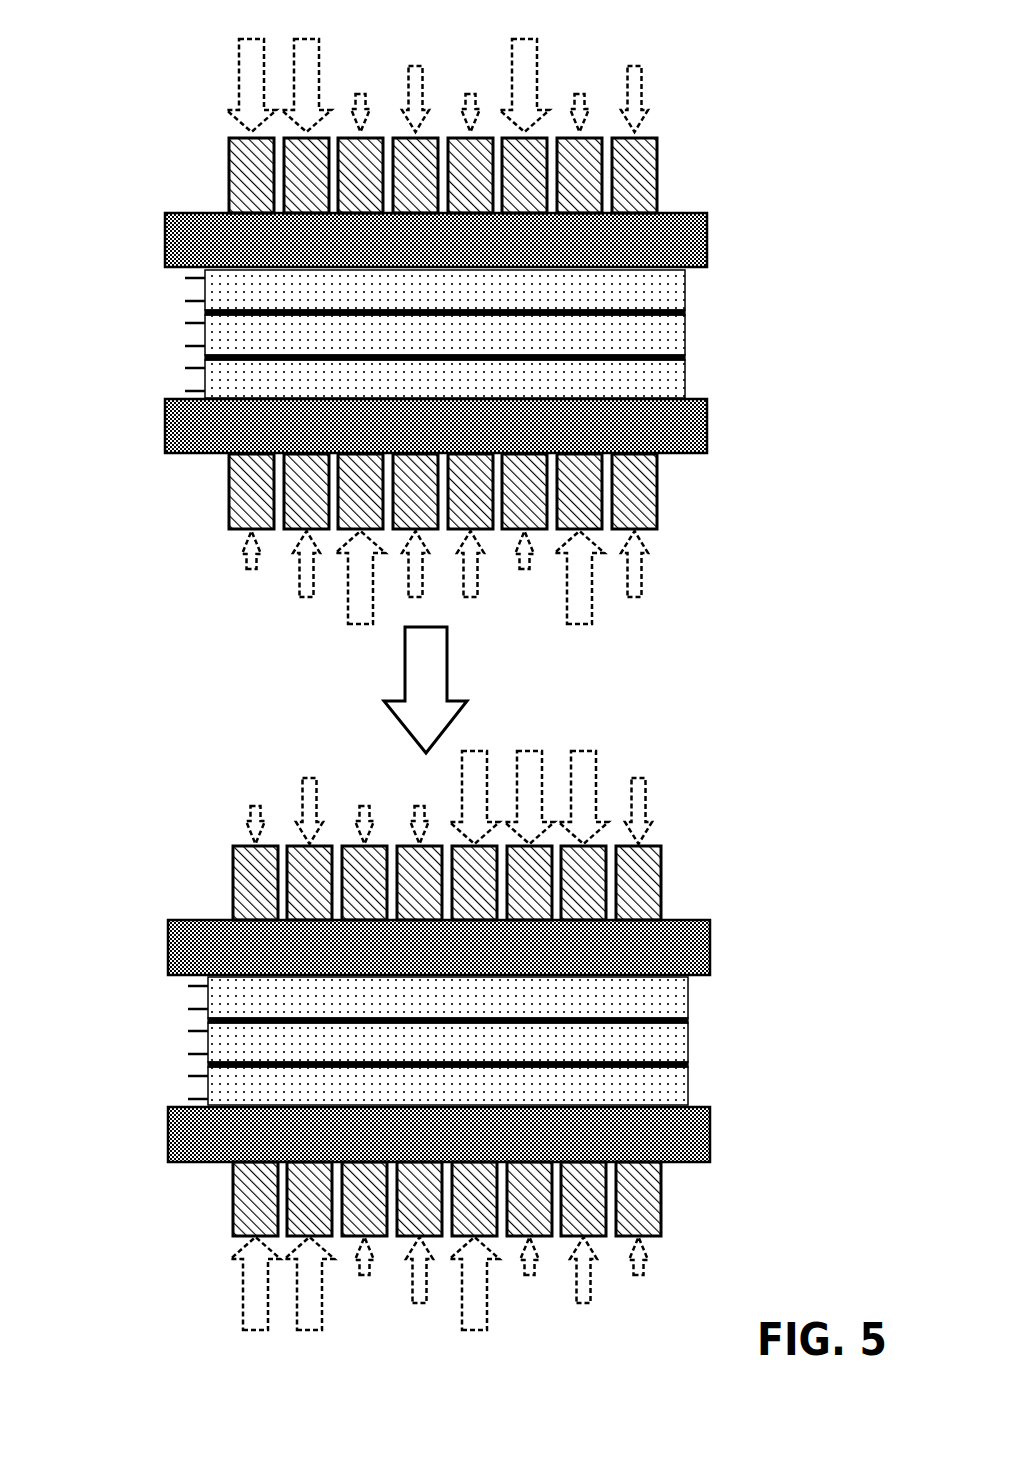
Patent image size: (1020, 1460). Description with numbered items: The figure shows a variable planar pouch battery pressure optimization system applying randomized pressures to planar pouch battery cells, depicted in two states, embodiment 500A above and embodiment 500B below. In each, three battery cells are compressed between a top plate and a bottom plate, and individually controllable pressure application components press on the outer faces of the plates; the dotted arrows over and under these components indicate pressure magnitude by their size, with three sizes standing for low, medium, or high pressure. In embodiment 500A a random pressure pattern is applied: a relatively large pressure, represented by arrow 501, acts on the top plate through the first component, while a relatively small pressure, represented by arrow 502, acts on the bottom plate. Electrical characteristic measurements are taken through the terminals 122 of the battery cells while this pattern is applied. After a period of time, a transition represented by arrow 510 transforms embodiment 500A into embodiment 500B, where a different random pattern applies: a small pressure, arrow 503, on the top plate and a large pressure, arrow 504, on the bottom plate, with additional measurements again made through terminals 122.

The embodiment with first random pressure pattern 500A is at (82, 92).
The embodiment with second random pressure pattern 500B is at (122, 730).
The arrow representing large pressure 501 is at (240, 88).
The arrow representing small pressure 502 is at (250, 568).
The arrow representing small pressure 503 is at (257, 807).
The arrow representing large pressure 504 is at (268, 1303).
The transition arrow 510 is at (442, 686).
The terminals 122 is at (165, 343).